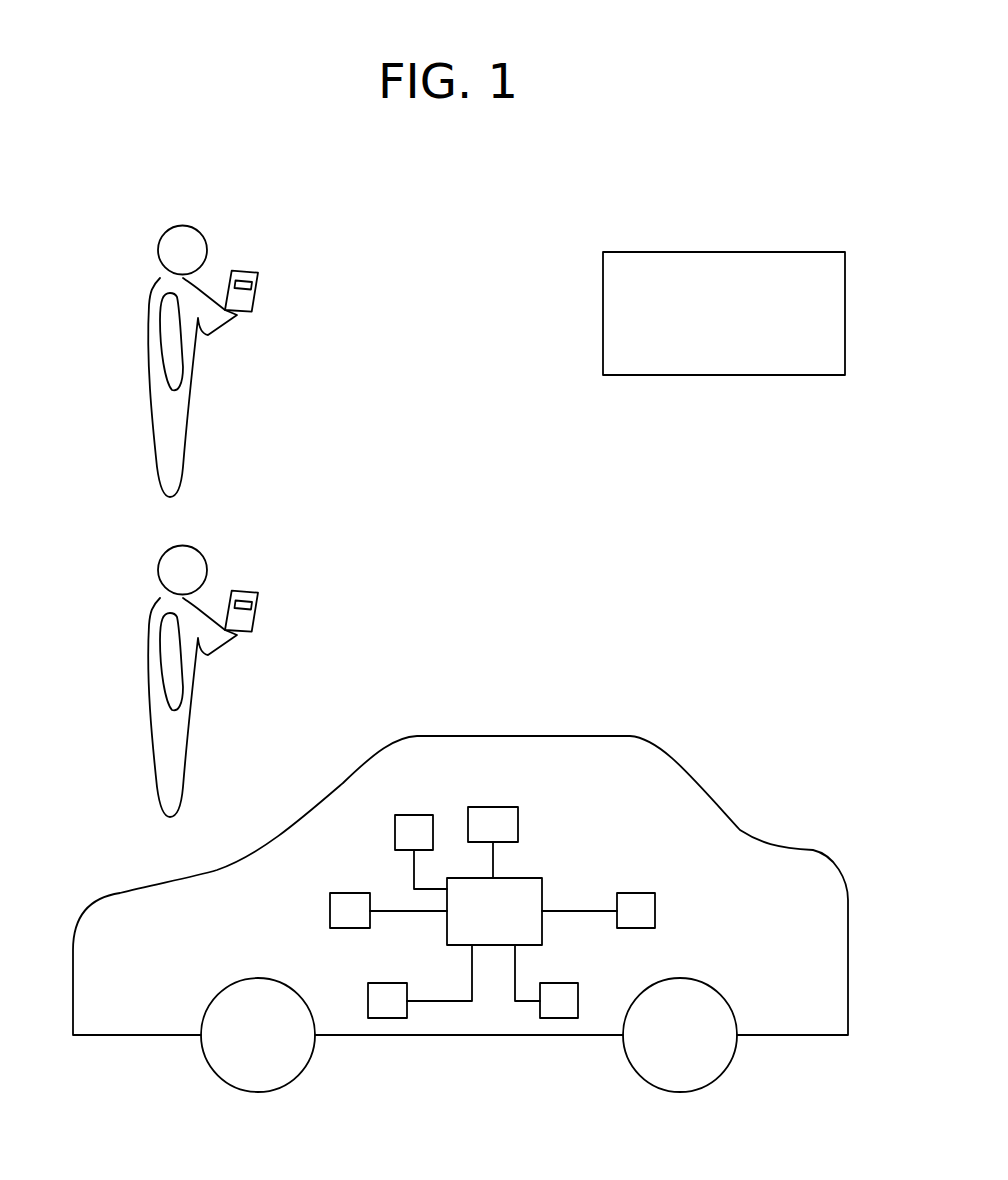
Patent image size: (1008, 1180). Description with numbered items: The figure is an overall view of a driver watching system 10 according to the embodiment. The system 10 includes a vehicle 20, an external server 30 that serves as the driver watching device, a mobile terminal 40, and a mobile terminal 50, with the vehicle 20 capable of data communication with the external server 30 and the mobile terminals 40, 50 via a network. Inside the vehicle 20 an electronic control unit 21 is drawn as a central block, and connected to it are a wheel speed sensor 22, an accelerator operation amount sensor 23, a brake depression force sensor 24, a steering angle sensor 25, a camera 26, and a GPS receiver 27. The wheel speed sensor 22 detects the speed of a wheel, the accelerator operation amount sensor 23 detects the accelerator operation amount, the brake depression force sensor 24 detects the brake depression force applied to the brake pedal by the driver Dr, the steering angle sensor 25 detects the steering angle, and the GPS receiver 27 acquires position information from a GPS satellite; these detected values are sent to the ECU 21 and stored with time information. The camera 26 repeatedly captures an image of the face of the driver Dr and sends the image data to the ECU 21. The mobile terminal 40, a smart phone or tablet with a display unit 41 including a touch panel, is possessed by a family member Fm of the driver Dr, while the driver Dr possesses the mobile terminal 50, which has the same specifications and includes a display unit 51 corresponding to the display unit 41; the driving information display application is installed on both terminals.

The system 10 is at (746, 609).
The vehicle 20 is at (672, 720).
The electronic control unit 21 is at (542, 927).
The wheel speed sensor 22 is at (390, 1018).
The accelerator operation amount sensor 23 is at (349, 893).
The brake depression force sensor 24 is at (560, 1018).
The steering angle sensor 25 is at (412, 815).
The camera 26 is at (492, 807).
The GPS receiver 27 is at (634, 893).
The external server 30 is at (723, 252).
The mobile terminal 40 is at (243, 270).
The display unit 41 is at (258, 285).
The mobile terminal 50 is at (243, 590).
The display unit 51 is at (258, 605).
The family member Fm is at (150, 303).
The driver Dr is at (150, 623).